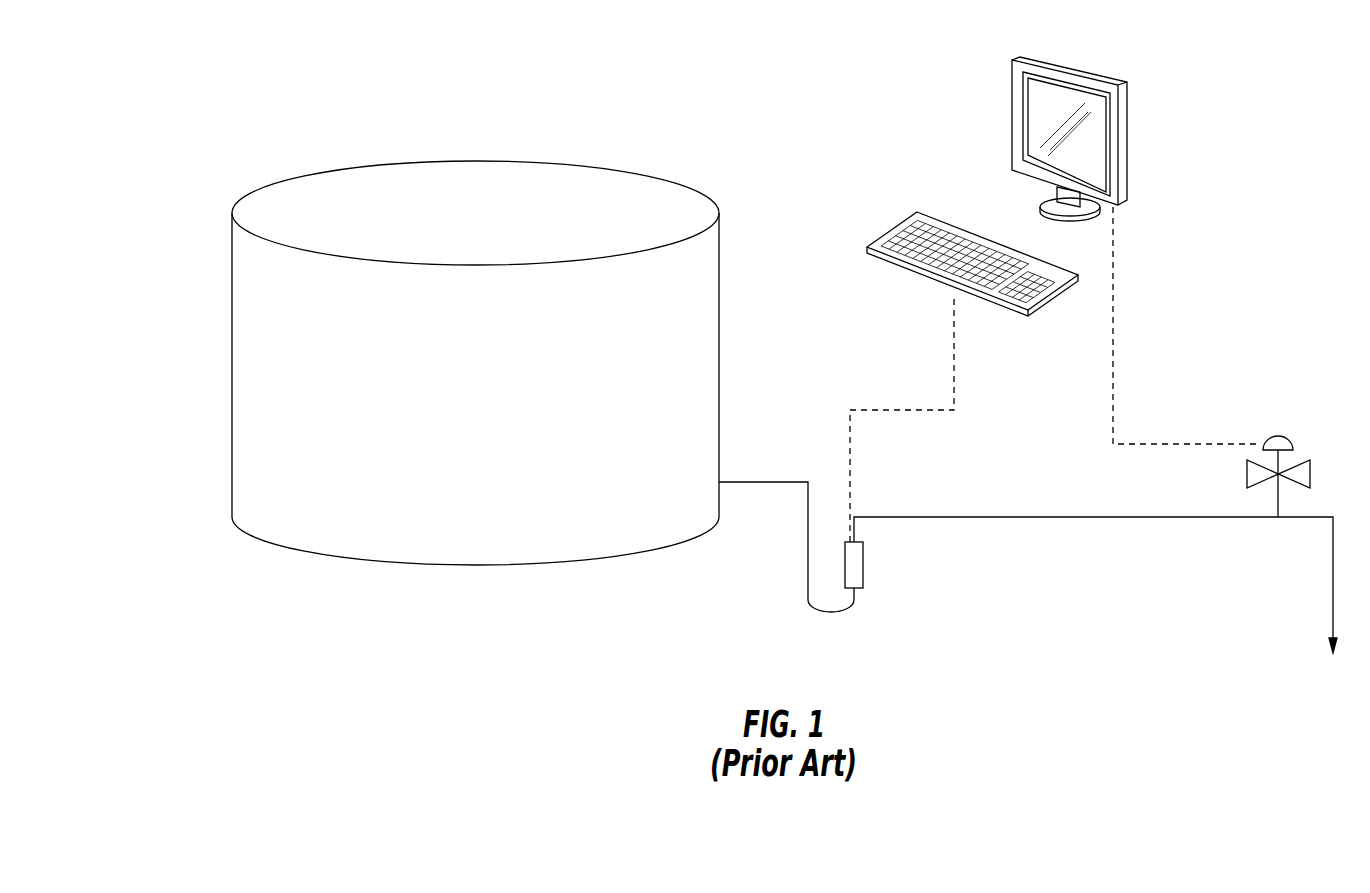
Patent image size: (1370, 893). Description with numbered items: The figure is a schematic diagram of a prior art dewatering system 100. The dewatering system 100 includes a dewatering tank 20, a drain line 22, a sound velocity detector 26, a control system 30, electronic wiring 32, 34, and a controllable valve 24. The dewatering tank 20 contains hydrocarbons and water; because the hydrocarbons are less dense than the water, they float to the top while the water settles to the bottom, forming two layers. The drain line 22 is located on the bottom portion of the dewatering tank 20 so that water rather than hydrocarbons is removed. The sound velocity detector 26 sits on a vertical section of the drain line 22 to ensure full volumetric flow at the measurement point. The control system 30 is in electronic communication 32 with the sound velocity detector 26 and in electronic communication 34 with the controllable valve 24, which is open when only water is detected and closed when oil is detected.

The dewatering system 100 is at (324, 71).
The dewatering tank 20 is at (490, 393).
The drain line 22 is at (1093, 517).
The controllable valve 24 is at (1280, 436).
The sound velocity detector 26 is at (864, 561).
The control system 30 is at (1073, 70).
The electronic wiring 32 is at (953, 360).
The electronic wiring 34 is at (1113, 337).